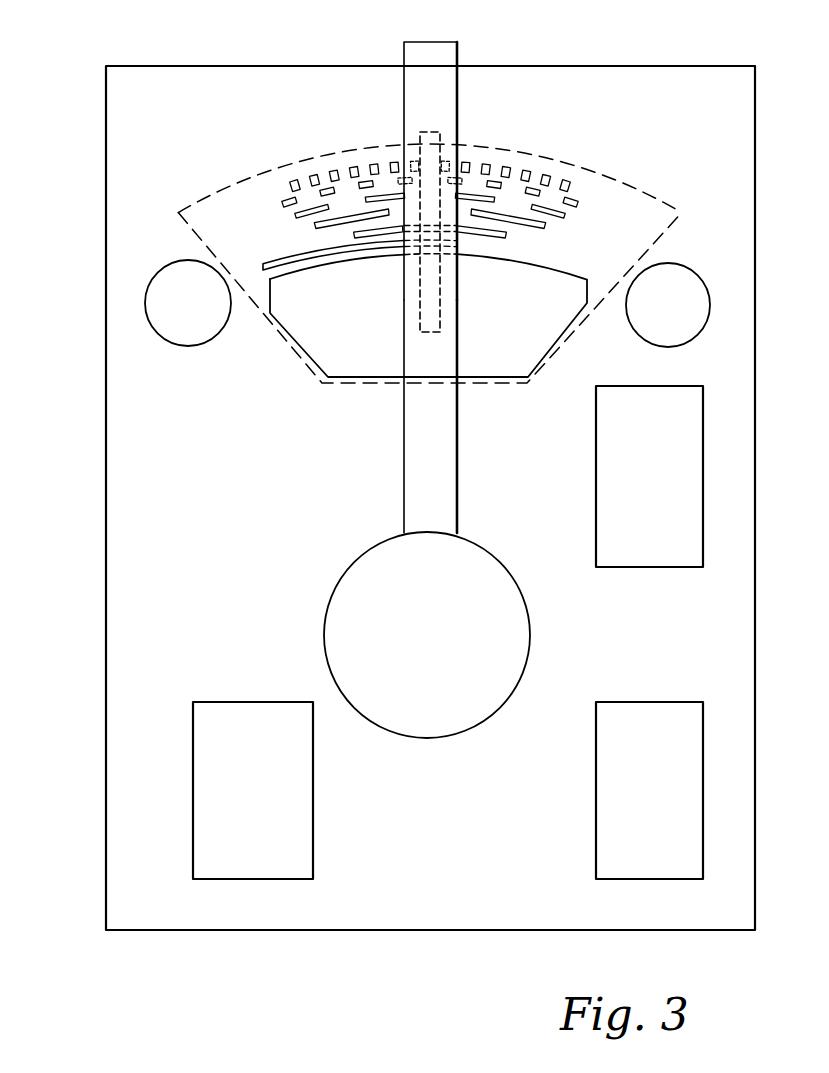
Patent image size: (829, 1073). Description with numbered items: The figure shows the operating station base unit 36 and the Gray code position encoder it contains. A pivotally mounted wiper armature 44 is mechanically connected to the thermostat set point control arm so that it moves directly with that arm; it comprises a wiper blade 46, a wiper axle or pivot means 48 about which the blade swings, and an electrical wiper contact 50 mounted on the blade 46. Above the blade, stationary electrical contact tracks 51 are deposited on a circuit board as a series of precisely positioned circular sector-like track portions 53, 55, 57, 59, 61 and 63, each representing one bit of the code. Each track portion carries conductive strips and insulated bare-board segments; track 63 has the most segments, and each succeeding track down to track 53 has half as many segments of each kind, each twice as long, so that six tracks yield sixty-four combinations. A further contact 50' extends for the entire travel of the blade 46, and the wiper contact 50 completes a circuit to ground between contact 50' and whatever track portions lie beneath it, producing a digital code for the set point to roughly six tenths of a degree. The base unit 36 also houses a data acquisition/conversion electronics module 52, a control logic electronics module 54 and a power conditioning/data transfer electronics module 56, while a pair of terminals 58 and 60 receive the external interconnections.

The operating station base unit 36 is at (100, 58).
The wiper armature 44 is at (460, 42).
The wiper blade 46 is at (404, 432).
The wiper axle or pivot means 48 is at (343, 578).
The electrical wiper contact 50 is at (473, 232).
The further contact 50' is at (418, 323).
The stationary electrical contact tracks 51 is at (254, 188).
The data acquisition/conversion electronics module 52 is at (182, 213).
The track portion 53 is at (266, 271).
The control logic electronics module 54 is at (597, 793).
The track portion 55 is at (490, 234).
The power conditioning/data transfer electronics module 56 is at (597, 470).
The track portion 57 is at (318, 225).
The terminal 58 is at (165, 262).
The track portion 59 is at (293, 216).
The terminal 60 is at (692, 265).
The track portion 61 is at (283, 205).
The track portion 63 is at (272, 186).